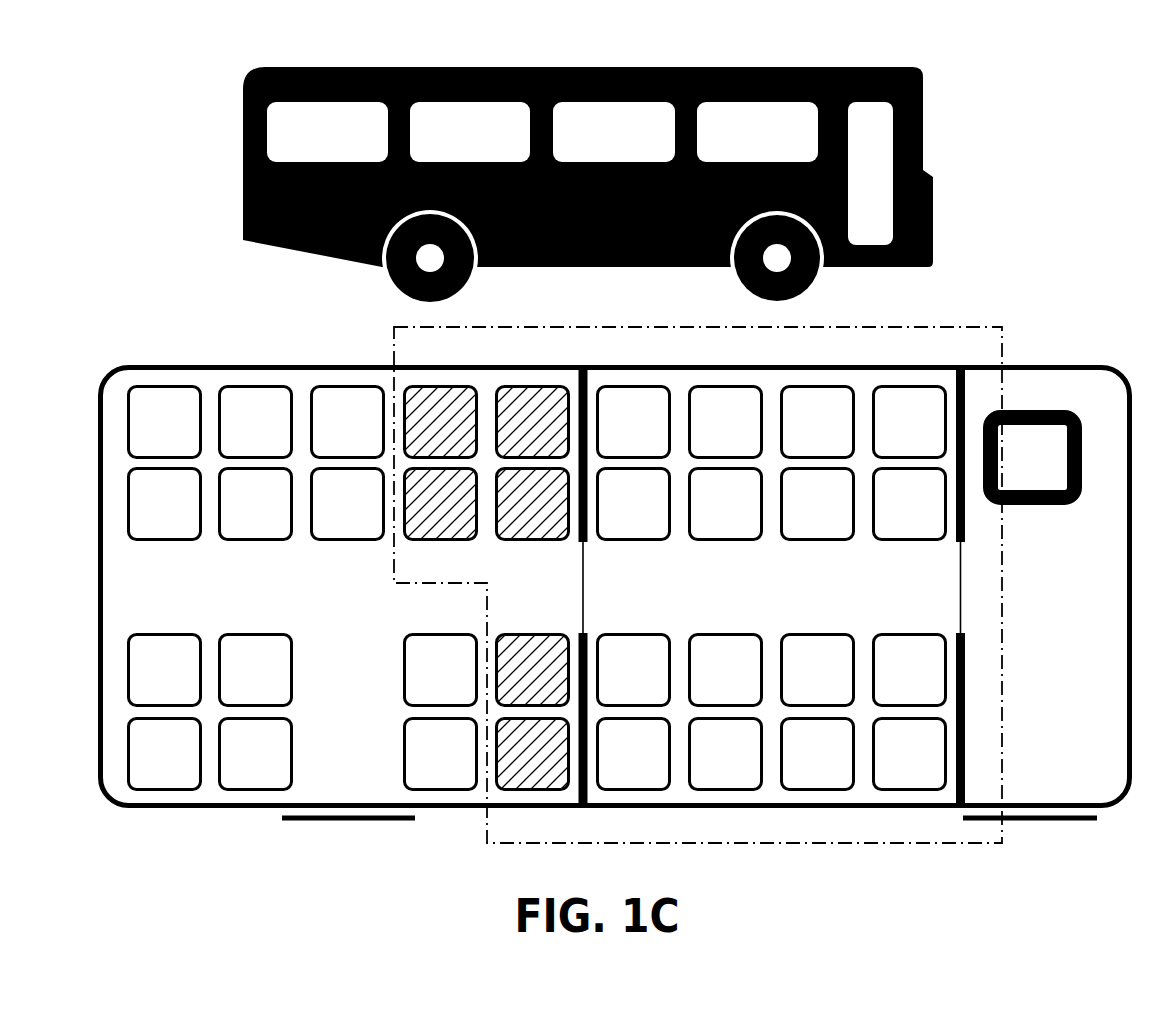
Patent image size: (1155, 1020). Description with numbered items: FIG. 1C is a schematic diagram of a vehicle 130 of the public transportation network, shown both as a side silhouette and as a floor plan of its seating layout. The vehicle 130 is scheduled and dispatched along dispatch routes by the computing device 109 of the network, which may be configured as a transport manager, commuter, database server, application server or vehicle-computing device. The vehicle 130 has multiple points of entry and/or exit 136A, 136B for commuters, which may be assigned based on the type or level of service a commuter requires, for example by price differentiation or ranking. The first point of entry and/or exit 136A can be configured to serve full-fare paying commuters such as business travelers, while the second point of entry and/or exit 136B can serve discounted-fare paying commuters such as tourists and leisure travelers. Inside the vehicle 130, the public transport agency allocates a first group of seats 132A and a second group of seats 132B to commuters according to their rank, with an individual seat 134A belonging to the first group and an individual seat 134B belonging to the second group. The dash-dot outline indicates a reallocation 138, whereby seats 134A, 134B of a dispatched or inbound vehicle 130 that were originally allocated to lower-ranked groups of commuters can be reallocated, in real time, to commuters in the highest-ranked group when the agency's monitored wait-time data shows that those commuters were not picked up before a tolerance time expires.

The computing device 109 is at (920, 77).
The vehicle 130 is at (585, 408).
The first group of seats 132A is at (772, 588).
The second group of seats 132B is at (349, 588).
The seat 134A is at (712, 543).
The seat 134B is at (153, 543).
The first point of entry and/or exit 136A is at (1072, 822).
The second point of entry and/or exit 136B is at (310, 821).
The seat reallocation 138 is at (961, 327).